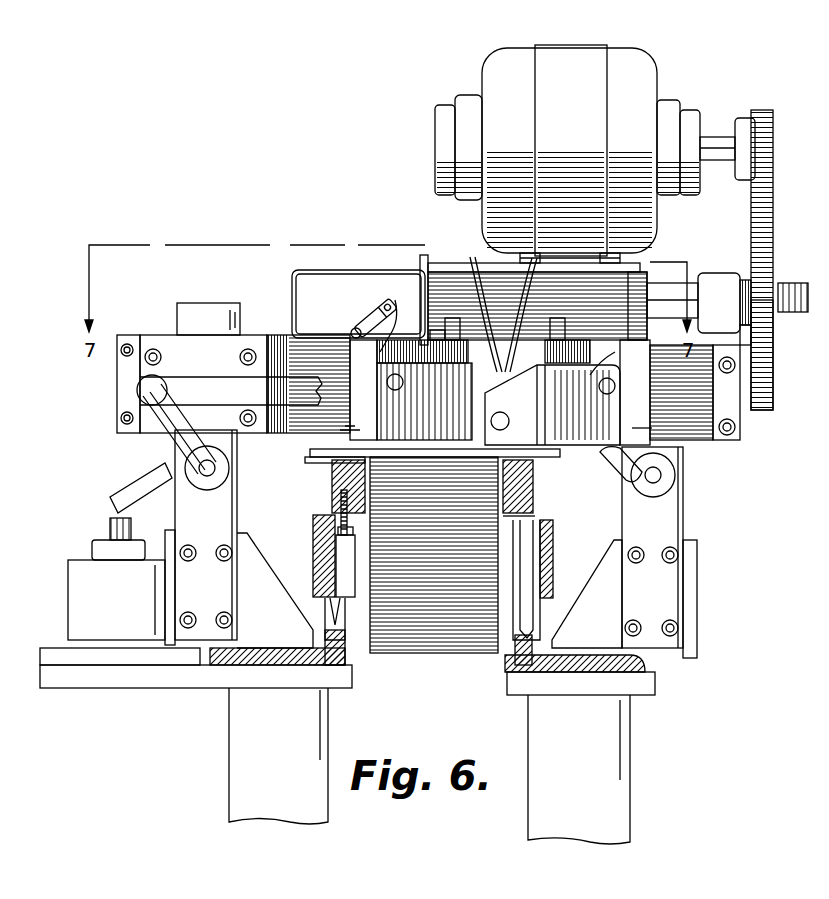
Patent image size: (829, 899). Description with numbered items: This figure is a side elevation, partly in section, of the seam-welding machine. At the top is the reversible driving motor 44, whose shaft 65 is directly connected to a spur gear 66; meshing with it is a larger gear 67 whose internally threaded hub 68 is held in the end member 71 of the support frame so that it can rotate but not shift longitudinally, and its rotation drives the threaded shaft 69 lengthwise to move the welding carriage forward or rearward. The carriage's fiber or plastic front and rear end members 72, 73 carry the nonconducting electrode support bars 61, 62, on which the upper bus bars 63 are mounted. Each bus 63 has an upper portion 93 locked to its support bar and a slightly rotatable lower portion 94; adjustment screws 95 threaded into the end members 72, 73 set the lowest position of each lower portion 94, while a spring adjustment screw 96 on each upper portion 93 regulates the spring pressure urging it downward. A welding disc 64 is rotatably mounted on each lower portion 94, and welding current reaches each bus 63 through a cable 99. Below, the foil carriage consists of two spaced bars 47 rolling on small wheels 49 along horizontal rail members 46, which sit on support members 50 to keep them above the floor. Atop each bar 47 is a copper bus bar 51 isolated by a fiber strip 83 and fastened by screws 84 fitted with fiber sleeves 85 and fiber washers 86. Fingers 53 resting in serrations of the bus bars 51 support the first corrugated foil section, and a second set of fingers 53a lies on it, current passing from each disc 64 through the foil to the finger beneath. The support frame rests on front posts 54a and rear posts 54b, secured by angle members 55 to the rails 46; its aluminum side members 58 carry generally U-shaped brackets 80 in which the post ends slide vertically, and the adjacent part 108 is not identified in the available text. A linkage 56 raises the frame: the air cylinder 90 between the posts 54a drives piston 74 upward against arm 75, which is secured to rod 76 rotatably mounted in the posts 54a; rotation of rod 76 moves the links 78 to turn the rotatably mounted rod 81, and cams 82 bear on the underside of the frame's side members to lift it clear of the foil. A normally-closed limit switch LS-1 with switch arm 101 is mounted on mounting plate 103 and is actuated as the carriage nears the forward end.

The driving motor 44 is at (620, 82).
The motor shaft 65 is at (716, 143).
The spur gear 66 is at (773, 145).
The larger gear 67 is at (773, 268).
The hub or bushing 68 is at (708, 275).
The threaded shaft 69 is at (792, 312).
The end member of support frame 71 is at (750, 335).
The rear end member 73 is at (636, 318).
The side plate 108 is at (126, 345).
The U-shaped brackets 80 is at (168, 348).
The links 78 is at (217, 377).
The side members 58 is at (120, 390).
The linkage 56 is at (145, 386).
The mounting plate 103 is at (296, 270).
The limit switch LS-1 is at (300, 292).
The switch arm 101 is at (378, 312).
The upper portion of bus bar 93 is at (658, 336).
The front end member 72 is at (352, 345).
The spring adjustment screw 96 is at (483, 340).
The lower portion of bus bar 94 is at (388, 410).
The electrode support bar 61 is at (388, 380).
The upper bus bars 63 is at (552, 405).
The electrode support bar 62 is at (614, 386).
The adjustment screws 95 is at (345, 430).
The cable 99 is at (480, 265).
The welding discs 64 is at (560, 453).
The fiber washers 86 is at (356, 548).
The fingers 53 is at (336, 462).
The second set of fingers 53a is at (447, 455).
The copper bus bars 51 is at (534, 490).
The fiber strips 83 is at (536, 516).
The spaced bars 47 is at (316, 578).
The screws 84 is at (346, 530).
The fiber sleeves 85 is at (340, 522).
The wheels 49 is at (536, 606).
The rail members 46 is at (520, 640).
The support members 50 is at (229, 776).
The front posts 54a is at (230, 518).
The rear posts 54b is at (682, 515).
The rod 76 is at (216, 470).
The cam 82 is at (150, 456).
The arm 75 is at (136, 498).
The piston 74 is at (117, 530).
The air cylinder 90 is at (80, 622).
The angle members 55 is at (692, 592).
The rod 81 is at (662, 477).